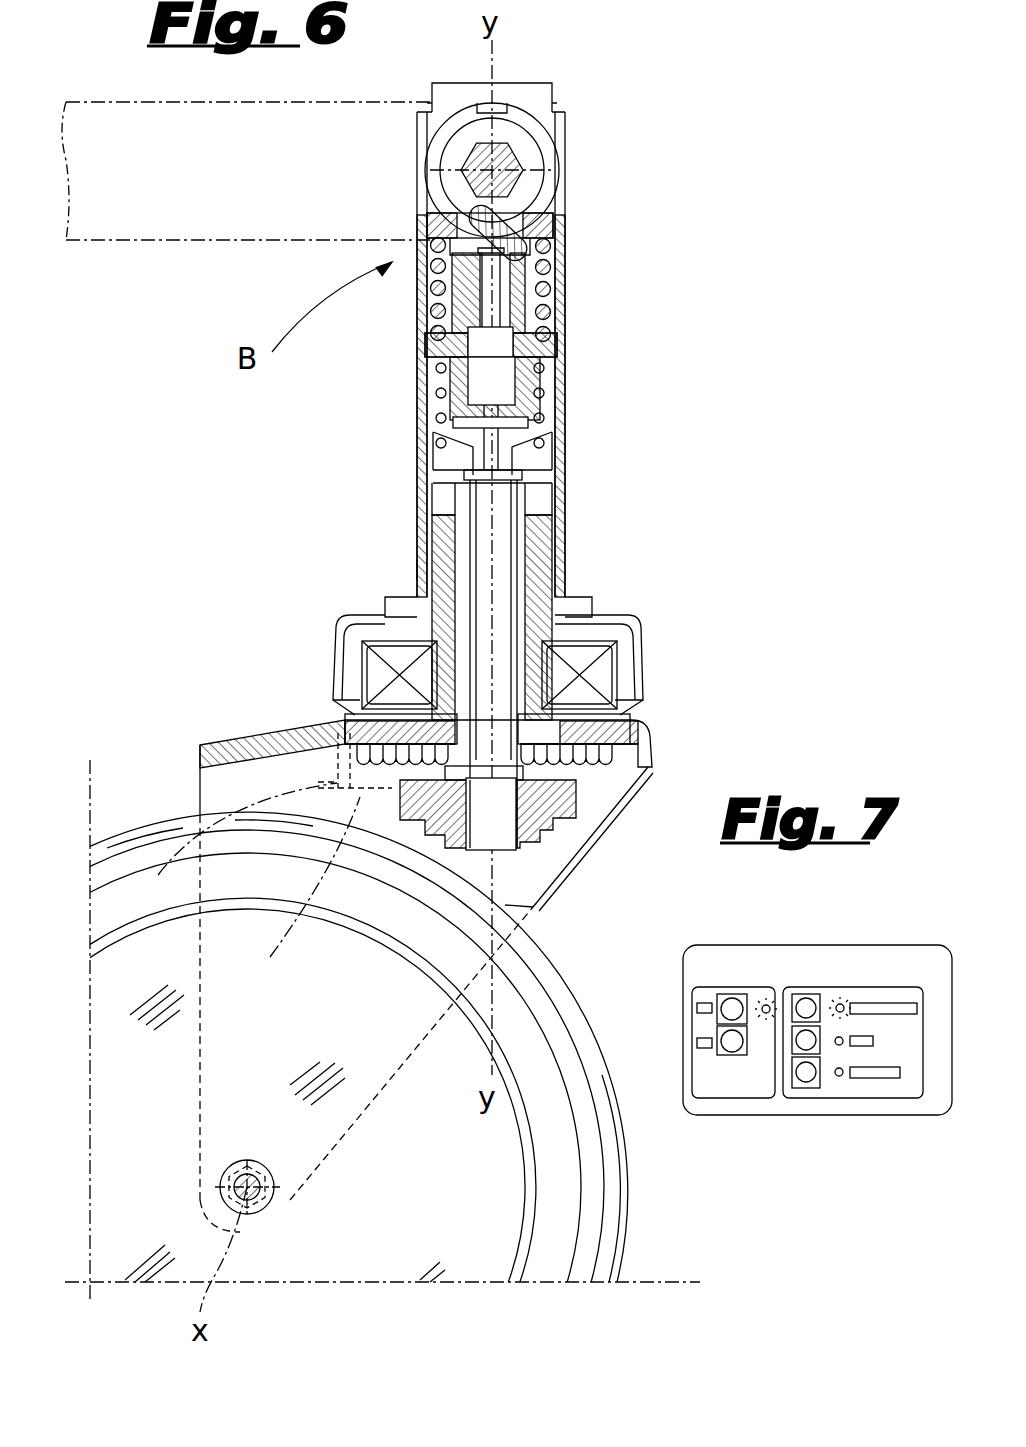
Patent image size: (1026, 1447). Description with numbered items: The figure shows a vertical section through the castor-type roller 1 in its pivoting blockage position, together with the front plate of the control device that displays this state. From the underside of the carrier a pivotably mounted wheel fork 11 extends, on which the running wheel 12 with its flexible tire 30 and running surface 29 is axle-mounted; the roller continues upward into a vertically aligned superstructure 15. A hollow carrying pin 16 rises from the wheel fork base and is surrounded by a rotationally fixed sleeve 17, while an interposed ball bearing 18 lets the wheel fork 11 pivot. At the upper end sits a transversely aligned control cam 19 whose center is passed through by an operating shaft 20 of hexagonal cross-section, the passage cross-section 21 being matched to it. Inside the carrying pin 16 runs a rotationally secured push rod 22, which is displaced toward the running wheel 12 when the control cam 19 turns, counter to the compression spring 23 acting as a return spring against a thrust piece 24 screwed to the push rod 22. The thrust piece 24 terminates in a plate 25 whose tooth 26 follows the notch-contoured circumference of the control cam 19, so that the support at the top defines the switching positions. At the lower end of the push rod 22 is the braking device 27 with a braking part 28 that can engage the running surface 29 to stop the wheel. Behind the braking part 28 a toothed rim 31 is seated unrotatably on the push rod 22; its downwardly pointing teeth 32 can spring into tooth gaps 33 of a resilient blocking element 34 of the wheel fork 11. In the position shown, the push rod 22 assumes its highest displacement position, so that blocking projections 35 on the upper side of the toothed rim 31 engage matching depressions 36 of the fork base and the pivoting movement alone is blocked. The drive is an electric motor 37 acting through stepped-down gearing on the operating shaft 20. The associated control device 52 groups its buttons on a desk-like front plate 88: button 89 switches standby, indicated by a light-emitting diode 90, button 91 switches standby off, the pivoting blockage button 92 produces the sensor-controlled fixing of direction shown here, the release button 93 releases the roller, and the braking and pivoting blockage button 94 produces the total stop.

In FIG. 6, the roller 1 is at (688, 578).
In FIG. 6, the wheel fork 11 is at (235, 780).
In FIG. 6, the running wheel 12 is at (565, 1200).
In FIG. 6, the superstructure 15 is at (605, 330).
In FIG. 6, the carrying pin 16 is at (432, 553).
In FIG. 6, the sleeve 17 is at (413, 563).
In FIG. 6, the ball bearing 18 is at (380, 660).
In FIG. 6, the control cam 19 is at (530, 150).
In FIG. 6, the operating shaft 20 is at (545, 188).
In FIG. 6, the passage cross-section 21 is at (462, 160).
In FIG. 6, the push rod 22 is at (497, 578).
In FIG. 6, the compression spring 23 is at (560, 438).
In FIG. 6, the thrust piece 24 is at (510, 300).
In FIG. 6, the plate 25 is at (540, 240).
In FIG. 6, the tooth 26 is at (450, 210).
In FIG. 6, the braking device 27 is at (592, 843).
In FIG. 6, the braking part 28 is at (553, 802).
In FIG. 6, the running surface 29 is at (505, 905).
In FIG. 6, the flexible tire 30 is at (600, 1194).
In FIG. 6, the toothed rim 31 is at (632, 742).
In FIG. 6, the teeth 32 is at (348, 738).
In FIG. 6, the tooth gaps 33 is at (303, 899).
In FIG. 6, the resilient blocking element 34 is at (237, 845).
In FIG. 6, the blocking projections 35 is at (577, 723).
In FIG. 6, the depressions 36 is at (640, 700).
In FIG. 6, the electric motor 37 is at (150, 250).
In FIG. 7, the control device 52 is at (688, 1055).
In FIG. 7, the front plate 88 is at (905, 978).
In FIG. 7, the button 89 is at (734, 1004).
In FIG. 7, the light-emitting diode 90 is at (766, 1004).
In FIG. 7, the button 91 is at (733, 1045).
In FIG. 7, the pivoting blockage button 92 is at (808, 1004).
In FIG. 7, the release button 93 is at (806, 1044).
In FIG. 7, the braking and pivoting blockage button 94 is at (807, 1076).